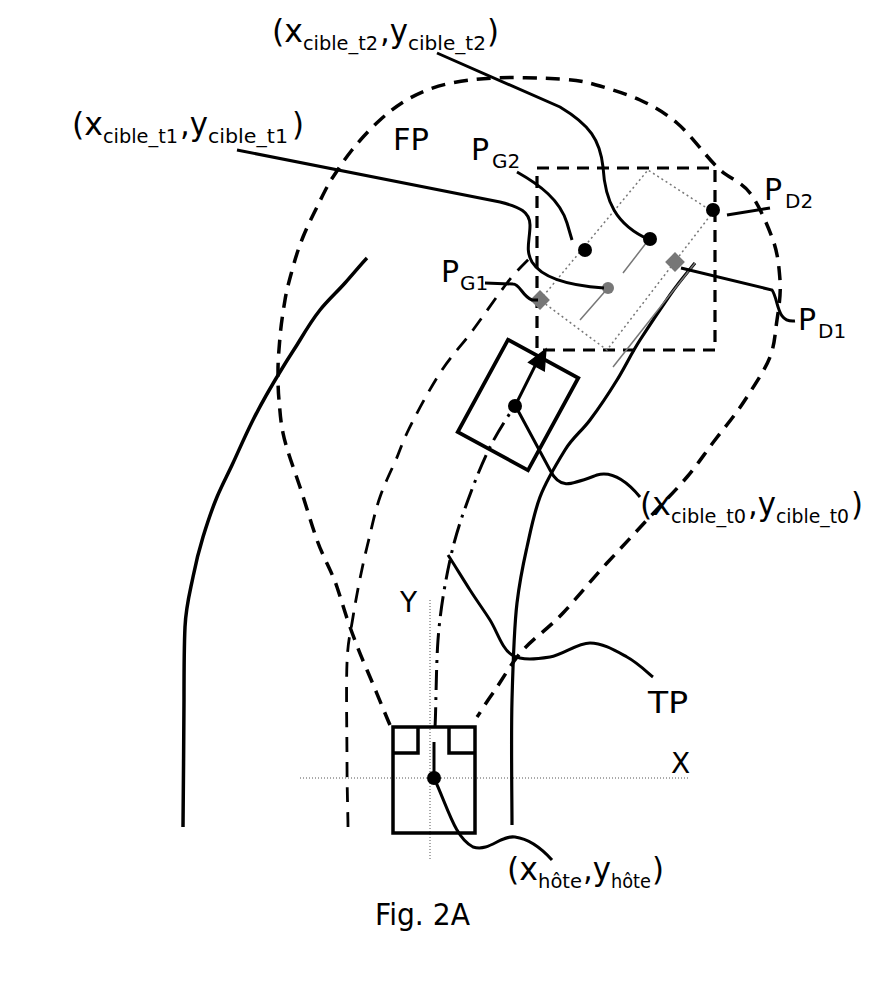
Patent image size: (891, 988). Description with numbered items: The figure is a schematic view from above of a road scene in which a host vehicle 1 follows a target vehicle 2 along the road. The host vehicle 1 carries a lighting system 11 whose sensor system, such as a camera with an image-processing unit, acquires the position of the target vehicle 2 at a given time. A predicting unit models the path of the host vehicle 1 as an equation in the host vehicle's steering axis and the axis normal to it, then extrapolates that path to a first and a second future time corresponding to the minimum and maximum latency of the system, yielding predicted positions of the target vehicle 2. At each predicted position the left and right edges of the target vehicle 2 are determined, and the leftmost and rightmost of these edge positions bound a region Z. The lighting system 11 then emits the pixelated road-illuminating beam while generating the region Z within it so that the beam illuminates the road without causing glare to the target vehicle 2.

The host vehicle 1 is at (434, 780).
The target vehicle 2 is at (518, 405).
The lighting system 11 is at (458, 742).
The region that does not cause glare Z is at (720, 180).